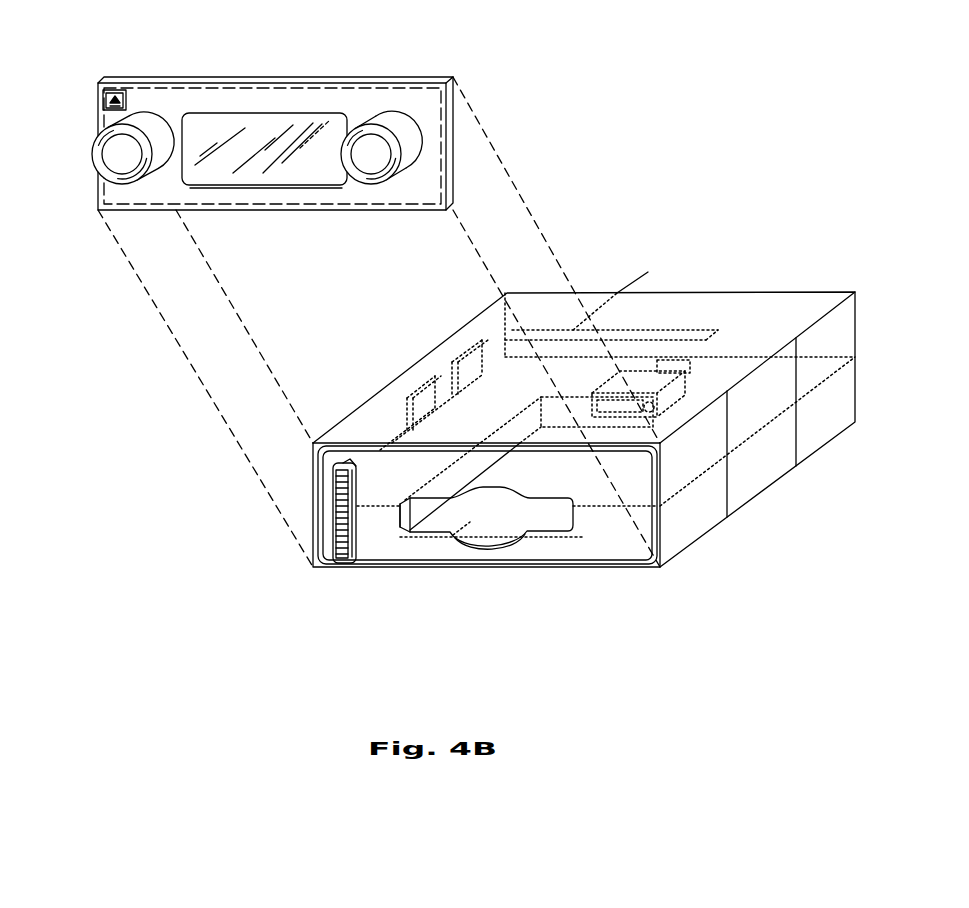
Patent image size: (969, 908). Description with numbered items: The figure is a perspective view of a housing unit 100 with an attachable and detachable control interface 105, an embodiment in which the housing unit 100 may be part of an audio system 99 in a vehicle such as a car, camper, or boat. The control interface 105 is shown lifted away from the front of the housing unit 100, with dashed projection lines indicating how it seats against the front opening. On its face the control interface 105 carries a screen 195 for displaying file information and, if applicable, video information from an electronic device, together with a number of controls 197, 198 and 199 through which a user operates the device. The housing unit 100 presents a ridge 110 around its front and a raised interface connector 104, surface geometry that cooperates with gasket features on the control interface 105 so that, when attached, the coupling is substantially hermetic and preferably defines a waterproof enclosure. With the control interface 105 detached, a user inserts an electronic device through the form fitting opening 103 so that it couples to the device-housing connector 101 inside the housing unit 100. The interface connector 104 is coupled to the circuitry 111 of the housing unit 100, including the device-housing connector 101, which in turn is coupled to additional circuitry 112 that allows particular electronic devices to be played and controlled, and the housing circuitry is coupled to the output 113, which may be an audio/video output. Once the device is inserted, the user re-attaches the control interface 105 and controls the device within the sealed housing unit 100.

The audio system 99 is at (743, 195).
The housing unit 100 is at (858, 425).
The device-housing connector 101 is at (687, 377).
The form fitting opening 103 is at (437, 498).
The interface connector 104 is at (338, 513).
The control interface 105 is at (257, 77).
The ridge 110 is at (318, 480).
The circuitry 111 is at (418, 398).
The additional circuitry 112 is at (462, 370).
The output 113 is at (623, 274).
The screen 195 is at (352, 193).
The control 197 is at (103, 98).
The control 198 is at (92, 151).
The control 199 is at (396, 176).